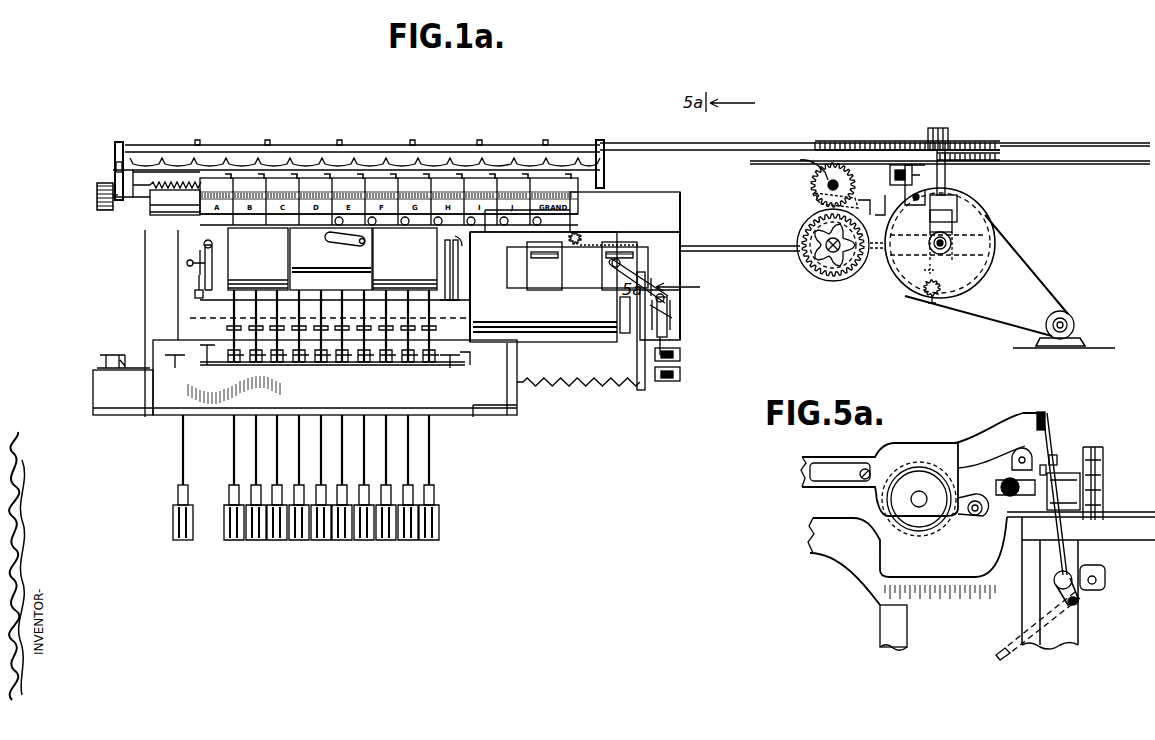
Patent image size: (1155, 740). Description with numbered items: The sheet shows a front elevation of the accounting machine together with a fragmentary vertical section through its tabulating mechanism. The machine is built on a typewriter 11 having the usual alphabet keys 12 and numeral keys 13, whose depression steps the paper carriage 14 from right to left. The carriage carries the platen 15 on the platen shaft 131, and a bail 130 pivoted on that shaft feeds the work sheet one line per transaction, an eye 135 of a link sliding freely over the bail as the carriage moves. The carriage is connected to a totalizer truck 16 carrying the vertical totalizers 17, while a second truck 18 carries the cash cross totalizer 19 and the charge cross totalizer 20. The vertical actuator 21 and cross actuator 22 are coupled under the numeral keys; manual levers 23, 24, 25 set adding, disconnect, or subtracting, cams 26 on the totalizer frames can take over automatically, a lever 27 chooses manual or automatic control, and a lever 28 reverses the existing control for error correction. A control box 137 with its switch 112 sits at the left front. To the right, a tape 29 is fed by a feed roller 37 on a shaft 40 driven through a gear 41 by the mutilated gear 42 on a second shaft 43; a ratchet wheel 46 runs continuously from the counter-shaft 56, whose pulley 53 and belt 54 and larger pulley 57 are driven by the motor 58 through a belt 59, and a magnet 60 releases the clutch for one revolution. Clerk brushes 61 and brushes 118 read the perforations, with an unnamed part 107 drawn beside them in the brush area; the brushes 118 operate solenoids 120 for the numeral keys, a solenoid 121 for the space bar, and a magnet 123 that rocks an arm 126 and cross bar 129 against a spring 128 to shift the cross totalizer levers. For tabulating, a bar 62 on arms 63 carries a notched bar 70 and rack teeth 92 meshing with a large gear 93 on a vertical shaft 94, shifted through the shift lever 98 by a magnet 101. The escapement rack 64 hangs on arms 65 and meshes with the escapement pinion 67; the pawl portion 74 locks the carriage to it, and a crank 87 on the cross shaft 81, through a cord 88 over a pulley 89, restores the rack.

In FIG. 1A, the typewriter 11 is at (482, 393).
In FIG. 5A, the typewriter 11 is at (936, 600).
In FIG. 1A, the alphabet keys 12 is at (342, 364).
In FIG. 1A, the numeral keys 13 is at (247, 325).
In FIG. 1A, the paper carriage 14 is at (116, 167).
In FIG. 1A, the platen 15 is at (138, 183).
In FIG. 5A, the platen 15 is at (918, 460).
In FIG. 1A, the totalizer truck 16 is at (178, 205).
In FIG. 1A, the vertical totalizers 17 is at (422, 232).
In FIG. 1A, the truck 18 is at (584, 263).
In FIG. 1A, the cash cross totalizer 19 is at (541, 289).
In FIG. 1A, the charge cross totalizer 20 is at (613, 289).
In FIG. 1A, the vertical actuator casing 21 is at (236, 238).
In FIG. 1A, the cross actuator casing 22 is at (561, 313).
In FIG. 1A, the manual lever 23 is at (195, 299).
In FIG. 1A, the manual lever 24 is at (613, 310).
In FIG. 1A, the manual lever 25 is at (668, 314).
In FIG. 1A, the cams 26 is at (283, 232).
In FIG. 1A, the lever 27 is at (457, 297).
In FIG. 1A, the lever 28 is at (186, 262).
In FIG. 1A, the tape 29 is at (757, 168).
In FIG. 1A, the feed roller 37 is at (826, 172).
In FIG. 1A, the shaft 40 is at (812, 190).
In FIG. 1A, the gear 41 is at (812, 204).
In FIG. 1A, the mutilated gear 42 is at (820, 290).
In FIG. 1A, the second shaft 43 is at (816, 270).
In FIG. 1A, the ratchet wheel 46 is at (829, 251).
In FIG. 1A, the pulley 53 is at (836, 274).
In FIG. 1A, the belt 54 is at (880, 273).
In FIG. 1A, the counter-shaft 56 is at (946, 245).
In FIG. 1A, the larger pulley 57 is at (976, 229).
In FIG. 1A, the motor 58 is at (1074, 332).
In FIG. 1A, the belt 59 is at (985, 318).
In FIG. 1A, the magnet 60 is at (910, 192).
In FIG. 1A, the clerk brushes 61 is at (930, 202).
In FIG. 1A, the bar 62 is at (492, 150).
In FIG. 5A, the bar 62 is at (1046, 406).
In FIG. 1A, the arms 63 is at (116, 148).
In FIG. 5A, the arms 63 is at (990, 423).
In FIG. 5A, the carriage escapement rack 64 is at (1046, 470).
In FIG. 5A, the arms 65 is at (1024, 456).
In FIG. 5A, the escapement pinion 67 is at (1040, 518).
In FIG. 1A, the bar 70 is at (378, 165).
In FIG. 5A, the bar 70 is at (1049, 440).
In FIG. 5A, the upwardly extending portion 74 is at (1052, 462).
In FIG. 1A, the cross shaft 81 is at (752, 252).
In FIG. 5A, the cross shaft 81 is at (1081, 606).
In FIG. 5A, the crank 87 is at (1058, 588).
In FIG. 5A, the flexible cord or wire 88 is at (1096, 528).
In FIG. 5A, the pulley 89 is at (1007, 481).
In FIG. 1A, the rack teeth 92 is at (833, 146).
In FIG. 1A, the large gear 93 is at (1007, 158).
In FIG. 1A, the vertical shaft 94 is at (947, 183).
In FIG. 1A, the shift lever 98 is at (933, 271).
In FIG. 1A, the magnet 101 is at (909, 296).
In FIG. 1A, the bracket 107 is at (898, 160).
In FIG. 1A, the switch 112 is at (106, 366).
In FIG. 1A, the brushes 118 is at (930, 148).
In FIG. 1A, the solenoids 120 is at (300, 536).
In FIG. 1A, the solenoid 121 is at (174, 524).
In FIG. 1A, the magnet 123 is at (668, 382).
In FIG. 1A, the arm 126 is at (637, 372).
In FIG. 1A, the spring 128 is at (574, 387).
In FIG. 1A, the cross bar 129 is at (641, 342).
In FIG. 5A, the bail 130 is at (975, 505).
In FIG. 5A, the platen shaft 131 is at (917, 501).
In FIG. 5A, the eye 135 is at (972, 517).
In FIG. 1A, the control box 137 is at (106, 393).